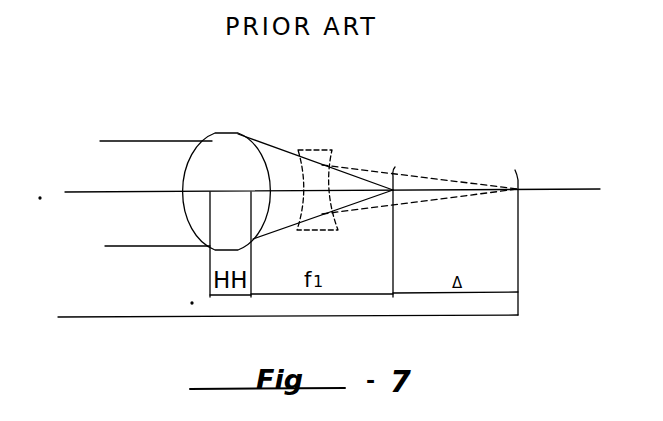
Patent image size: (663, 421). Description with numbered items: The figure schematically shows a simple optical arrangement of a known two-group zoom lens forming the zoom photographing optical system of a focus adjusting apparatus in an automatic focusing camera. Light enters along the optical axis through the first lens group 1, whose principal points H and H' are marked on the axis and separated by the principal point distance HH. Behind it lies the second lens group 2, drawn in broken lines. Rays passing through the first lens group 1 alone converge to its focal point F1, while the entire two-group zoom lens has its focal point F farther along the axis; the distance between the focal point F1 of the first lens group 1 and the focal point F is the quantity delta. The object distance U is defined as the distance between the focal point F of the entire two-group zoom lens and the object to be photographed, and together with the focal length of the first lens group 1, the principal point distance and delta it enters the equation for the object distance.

The first lens group 1 is at (239, 136).
The second lens group 2 is at (333, 150).
The principal point H is at (257, 162).
The focal point of the first lens group F1 is at (397, 220).
The focal point of the entire two-group zoom lens F is at (513, 232).
The object distance U is at (288, 302).